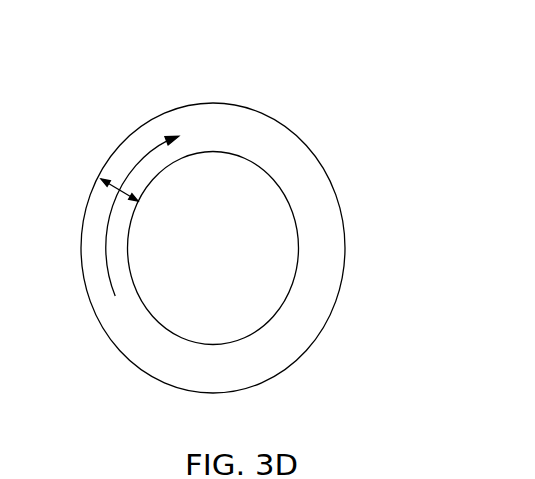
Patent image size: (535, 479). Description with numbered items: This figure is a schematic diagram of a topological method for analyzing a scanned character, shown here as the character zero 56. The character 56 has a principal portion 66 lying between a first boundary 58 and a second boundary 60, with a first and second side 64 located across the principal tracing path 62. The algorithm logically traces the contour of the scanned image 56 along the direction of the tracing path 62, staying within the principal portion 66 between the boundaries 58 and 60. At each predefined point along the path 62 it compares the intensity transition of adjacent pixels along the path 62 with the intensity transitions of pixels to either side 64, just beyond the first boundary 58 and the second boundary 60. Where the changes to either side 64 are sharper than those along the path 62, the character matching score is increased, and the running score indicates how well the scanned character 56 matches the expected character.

The character 56 is at (289, 90).
The first boundary 58 is at (199, 104).
The second boundary 60 is at (285, 198).
The principal tracing path 62 is at (140, 160).
The first and second side 64 is at (118, 190).
The principal portion 66 is at (315, 222).